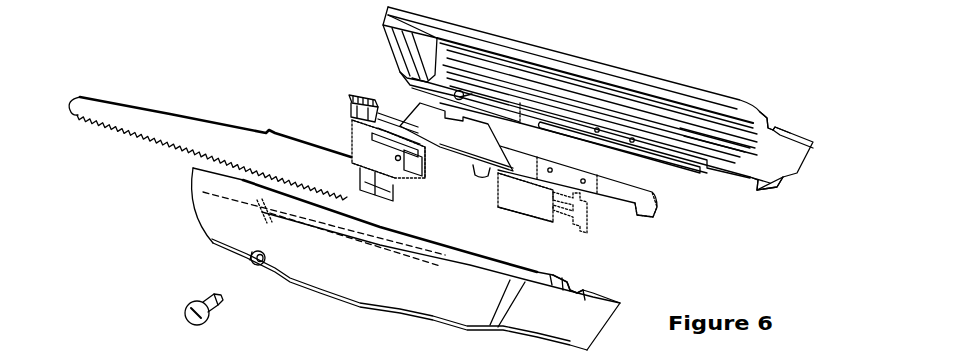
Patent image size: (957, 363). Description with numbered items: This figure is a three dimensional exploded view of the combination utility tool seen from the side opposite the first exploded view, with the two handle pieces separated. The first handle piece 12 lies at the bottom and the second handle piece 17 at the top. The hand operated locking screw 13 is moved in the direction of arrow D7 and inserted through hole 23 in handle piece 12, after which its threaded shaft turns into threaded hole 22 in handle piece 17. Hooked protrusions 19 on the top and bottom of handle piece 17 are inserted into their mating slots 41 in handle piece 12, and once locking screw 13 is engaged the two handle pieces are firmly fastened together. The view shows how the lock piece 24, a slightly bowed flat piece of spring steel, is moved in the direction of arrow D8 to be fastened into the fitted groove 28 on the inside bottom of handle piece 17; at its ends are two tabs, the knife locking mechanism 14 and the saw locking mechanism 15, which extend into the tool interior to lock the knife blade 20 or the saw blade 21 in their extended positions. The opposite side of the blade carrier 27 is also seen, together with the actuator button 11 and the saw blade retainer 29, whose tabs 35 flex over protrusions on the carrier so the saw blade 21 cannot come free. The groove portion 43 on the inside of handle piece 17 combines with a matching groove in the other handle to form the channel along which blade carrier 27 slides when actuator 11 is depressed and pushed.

The actuator button 11 is at (353, 93).
The handle piece 12 is at (222, 220).
The locking screw 13 is at (180, 308).
The knife locking mechanism 14 is at (662, 212).
The saw locking mechanism 15 is at (480, 178).
The handle piece 17 is at (685, 84).
The hooked protrusion 19 is at (770, 128).
The knife blade 20 is at (455, 143).
The saw blade 21 is at (121, 114).
The threaded hole 22 is at (447, 91).
The hole 23 is at (260, 268).
The lock piece 24 is at (610, 173).
The blade carrier 27 is at (363, 152).
The fitted groove 28 is at (697, 163).
The saw blade retainer 29 is at (530, 203).
The tabs 35 is at (588, 229).
The mating slot 41 is at (585, 283).
The groove portion 43 is at (728, 143).
The arrow D7 is at (250, 268).
The arrow D8 is at (605, 143).